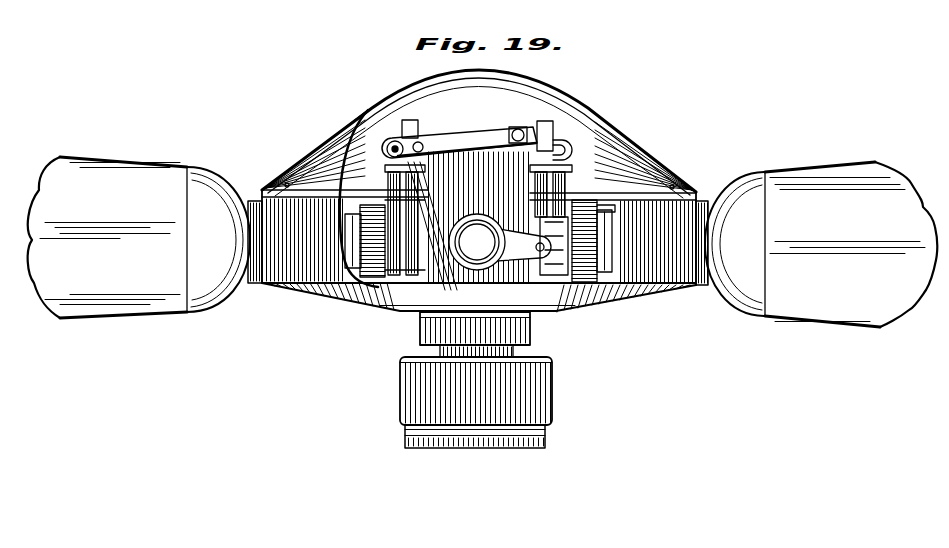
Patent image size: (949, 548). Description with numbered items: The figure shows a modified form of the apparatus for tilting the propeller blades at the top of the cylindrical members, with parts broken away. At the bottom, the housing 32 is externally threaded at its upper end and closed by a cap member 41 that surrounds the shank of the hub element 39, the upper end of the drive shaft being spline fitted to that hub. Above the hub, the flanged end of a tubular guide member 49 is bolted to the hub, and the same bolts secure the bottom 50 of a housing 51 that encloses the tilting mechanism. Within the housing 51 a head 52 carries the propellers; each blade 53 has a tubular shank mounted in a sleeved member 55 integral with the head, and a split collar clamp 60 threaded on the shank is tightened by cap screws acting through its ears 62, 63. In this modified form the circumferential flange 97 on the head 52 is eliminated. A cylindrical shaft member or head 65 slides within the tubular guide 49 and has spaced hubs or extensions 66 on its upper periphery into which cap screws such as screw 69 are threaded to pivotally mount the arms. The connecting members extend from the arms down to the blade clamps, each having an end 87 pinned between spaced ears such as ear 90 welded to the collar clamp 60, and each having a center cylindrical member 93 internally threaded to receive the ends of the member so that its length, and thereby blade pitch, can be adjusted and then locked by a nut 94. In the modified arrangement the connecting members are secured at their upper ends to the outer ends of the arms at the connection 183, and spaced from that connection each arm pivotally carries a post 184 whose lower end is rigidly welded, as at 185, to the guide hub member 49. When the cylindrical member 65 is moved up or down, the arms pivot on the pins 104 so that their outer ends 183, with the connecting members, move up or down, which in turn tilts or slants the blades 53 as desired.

The housing 32 is at (546, 440).
The hub element 39 is at (532, 340).
The cap member 41 is at (553, 377).
The tubular guide member 49 is at (530, 290).
The bottom of housing 50 is at (612, 308).
The housing 51 is at (258, 284).
The head 52 is at (600, 193).
The blades 53 is at (70, 315).
The sleeved members 55 is at (612, 214).
The split collar clamps 60 is at (555, 280).
The ear 62 is at (594, 236).
The ear 63 is at (592, 253).
The cylindrical shaft member or head 65 is at (478, 166).
The hubs or extensions 66 is at (422, 125).
The cap screw 69 is at (528, 132).
The end of connecting member 87 is at (360, 252).
The ear 90 is at (505, 228).
The center cylindrical member 93 is at (598, 194).
The nut 94 is at (570, 188).
The circumferential flange 97 is at (350, 198).
The pins 104 is at (416, 143).
The connection 183 is at (388, 143).
The posts 184 is at (462, 150).
The weld 185 is at (440, 287).